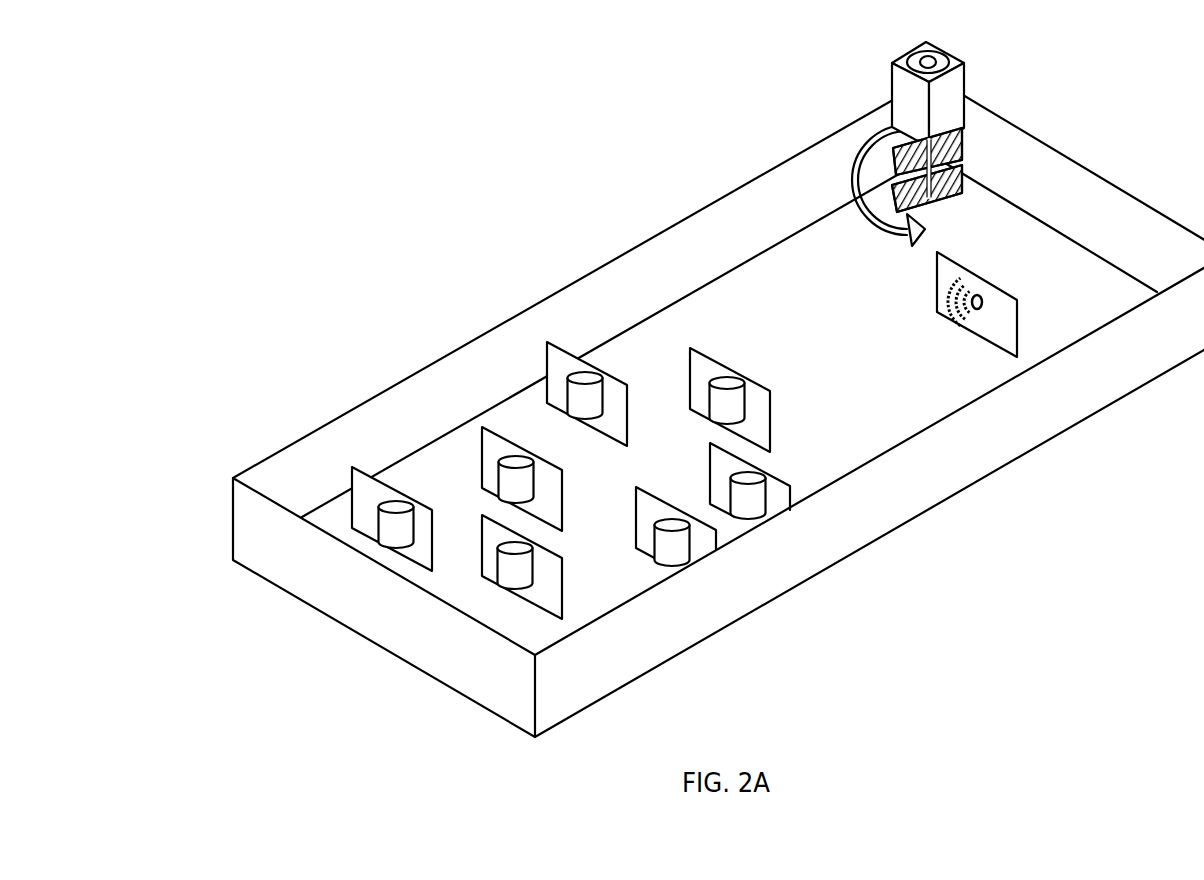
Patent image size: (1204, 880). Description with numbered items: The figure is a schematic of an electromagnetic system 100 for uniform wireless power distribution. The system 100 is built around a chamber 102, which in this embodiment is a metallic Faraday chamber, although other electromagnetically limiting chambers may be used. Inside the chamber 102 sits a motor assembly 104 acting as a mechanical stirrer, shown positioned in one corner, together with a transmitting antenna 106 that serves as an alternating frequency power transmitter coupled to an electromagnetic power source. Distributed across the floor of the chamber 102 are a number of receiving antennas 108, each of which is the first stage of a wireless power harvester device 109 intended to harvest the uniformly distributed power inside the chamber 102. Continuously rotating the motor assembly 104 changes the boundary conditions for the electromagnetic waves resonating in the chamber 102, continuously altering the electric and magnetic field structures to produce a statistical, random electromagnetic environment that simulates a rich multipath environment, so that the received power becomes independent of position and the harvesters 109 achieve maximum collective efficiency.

The electromagnetic system 100 is at (283, 135).
The chamber 102 is at (707, 207).
The motor assembly 104 is at (873, 46).
The transmitting antenna 106 is at (935, 273).
The receiving antenna 108 is at (709, 461).
The wireless power harvester device 109 is at (567, 403).